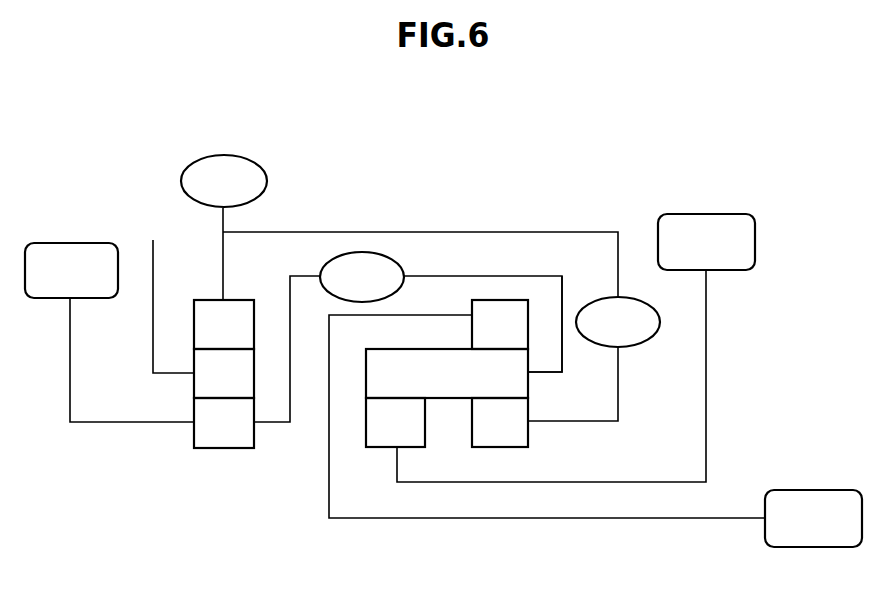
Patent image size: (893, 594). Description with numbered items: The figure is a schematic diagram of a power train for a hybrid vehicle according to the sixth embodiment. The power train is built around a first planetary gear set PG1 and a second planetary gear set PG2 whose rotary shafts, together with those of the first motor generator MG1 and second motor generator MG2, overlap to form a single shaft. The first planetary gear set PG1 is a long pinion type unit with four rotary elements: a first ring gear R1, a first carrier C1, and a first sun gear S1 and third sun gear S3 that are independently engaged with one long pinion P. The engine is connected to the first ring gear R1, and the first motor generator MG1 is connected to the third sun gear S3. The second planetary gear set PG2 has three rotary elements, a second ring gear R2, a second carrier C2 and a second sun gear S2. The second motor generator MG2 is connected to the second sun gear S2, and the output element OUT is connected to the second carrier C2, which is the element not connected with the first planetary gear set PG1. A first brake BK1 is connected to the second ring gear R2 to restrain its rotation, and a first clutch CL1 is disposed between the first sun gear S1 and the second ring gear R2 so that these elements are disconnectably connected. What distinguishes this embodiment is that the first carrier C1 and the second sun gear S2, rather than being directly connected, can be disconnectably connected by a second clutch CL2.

The output element OUT is at (154, 222).
The first brake BK1 is at (224, 181).
The first clutch CL1 is at (618, 322).
The second clutch CL2 is at (362, 277).
The first motor generator MG1 is at (706, 242).
The second motor generator MG2 is at (71, 270).
The first planetary gear set PG1 is at (450, 290).
The second planetary gear set PG2 is at (221, 468).
The first ring gear R1 is at (500, 324).
The second ring gear R2 is at (224, 324).
The first carrier C1 is at (545, 339).
The second carrier C2 is at (224, 373).
The first sun gear S1 is at (500, 422).
The second sun gear S2 is at (224, 423).
The third sun gear S3 is at (395, 422).
The long pinion P is at (447, 373).